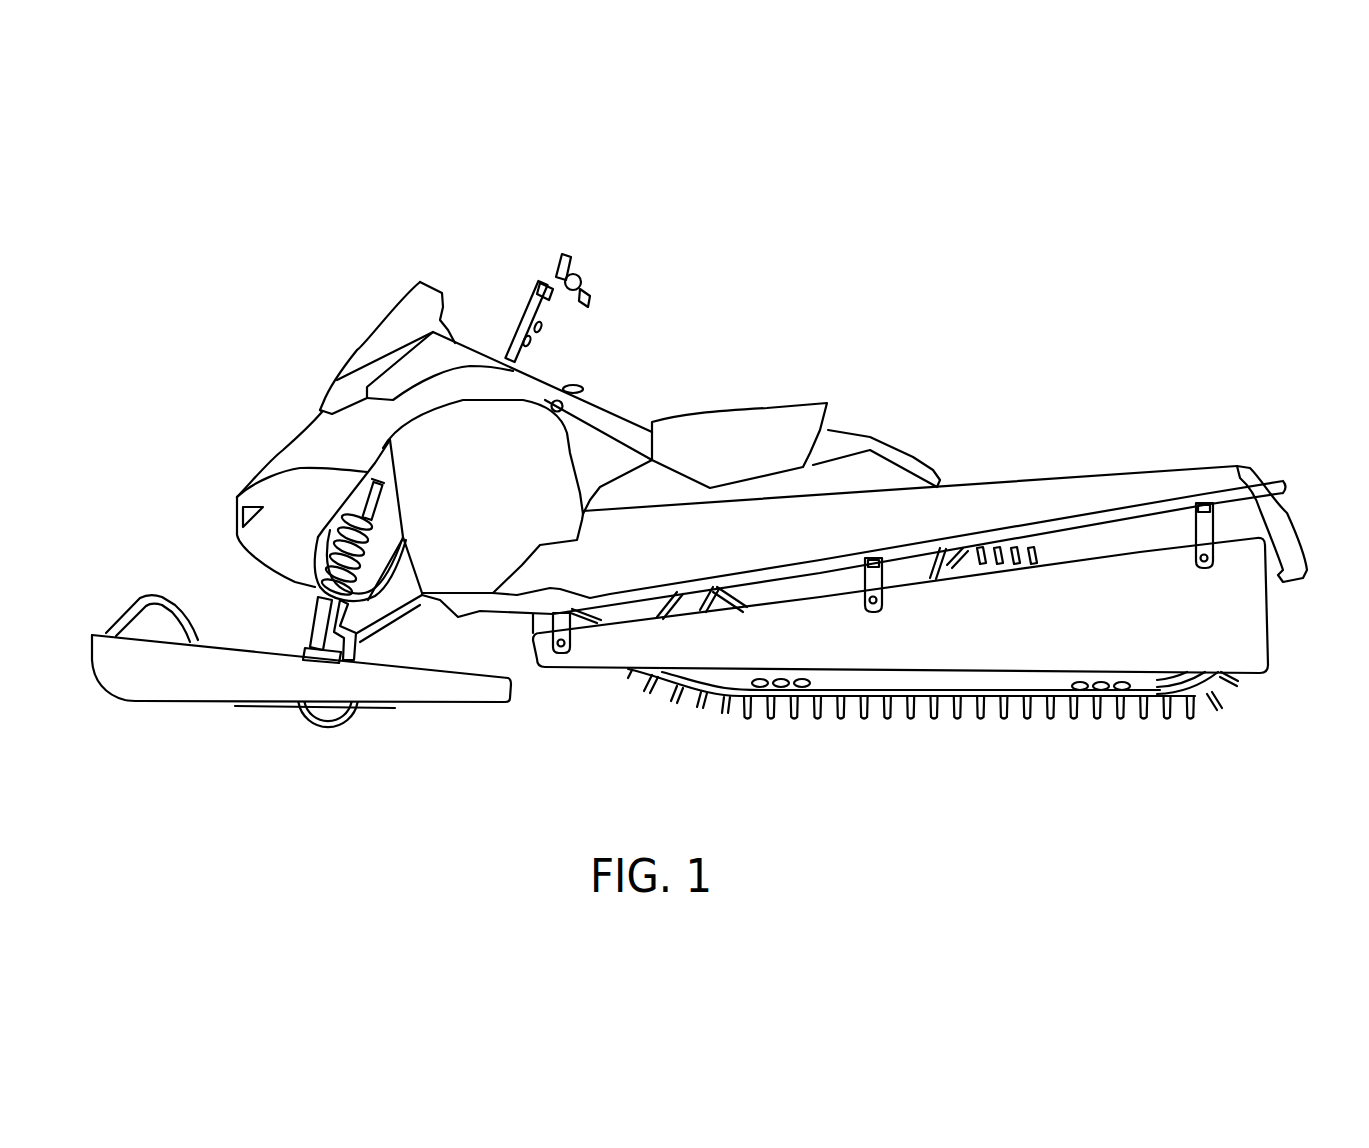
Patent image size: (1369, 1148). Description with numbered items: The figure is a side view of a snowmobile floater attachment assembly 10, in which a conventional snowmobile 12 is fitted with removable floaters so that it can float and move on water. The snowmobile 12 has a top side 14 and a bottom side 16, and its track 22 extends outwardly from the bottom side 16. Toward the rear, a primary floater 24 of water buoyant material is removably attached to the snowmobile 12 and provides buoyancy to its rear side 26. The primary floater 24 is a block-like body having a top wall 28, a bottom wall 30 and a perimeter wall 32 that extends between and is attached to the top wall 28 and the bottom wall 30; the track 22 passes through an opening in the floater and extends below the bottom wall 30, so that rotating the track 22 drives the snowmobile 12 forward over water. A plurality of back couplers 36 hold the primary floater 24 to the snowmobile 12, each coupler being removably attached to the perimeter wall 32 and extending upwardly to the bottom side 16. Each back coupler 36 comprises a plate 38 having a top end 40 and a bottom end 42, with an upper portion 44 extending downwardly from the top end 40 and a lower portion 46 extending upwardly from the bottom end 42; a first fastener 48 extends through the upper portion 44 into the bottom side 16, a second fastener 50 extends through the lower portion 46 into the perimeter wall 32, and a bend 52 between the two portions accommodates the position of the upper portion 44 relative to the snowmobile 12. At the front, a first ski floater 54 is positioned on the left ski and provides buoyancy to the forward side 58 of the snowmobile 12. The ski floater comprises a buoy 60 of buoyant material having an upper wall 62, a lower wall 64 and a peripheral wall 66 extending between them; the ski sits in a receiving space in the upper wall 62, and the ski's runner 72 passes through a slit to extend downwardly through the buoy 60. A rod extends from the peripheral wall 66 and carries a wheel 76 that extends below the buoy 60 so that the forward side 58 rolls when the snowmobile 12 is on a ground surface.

The snowmobile floater attachment assembly 10 is at (393, 198).
The snowmobile 12 is at (835, 352).
The top side 14 is at (742, 408).
The bottom side 16 is at (510, 607).
The track 22 is at (1197, 713).
The primary floater 24 is at (1227, 653).
The rear side 26 is at (1288, 493).
The top wall 28 is at (1124, 554).
The bottom wall 30 is at (1037, 676).
The perimeter wall 32 is at (1268, 627).
The back couplers 36 is at (904, 565).
The plate 38 is at (886, 560).
The top end 40 is at (876, 556).
The bottom end 42 is at (873, 614).
The upper portion 44 is at (850, 598).
The lower portion 46 is at (858, 596).
The first fastener 48 is at (1212, 556).
The second fastener 50 is at (1217, 507).
The bend 52 is at (1188, 503).
The first ski floater 54 is at (163, 682).
The forward side 58 is at (231, 484).
The buoy 60 is at (248, 683).
The upper wall 62 is at (230, 648).
The lower wall 64 is at (212, 705).
The peripheral wall 66 is at (100, 680).
The runner 72 is at (333, 727).
The wheel 76 is at (323, 727).